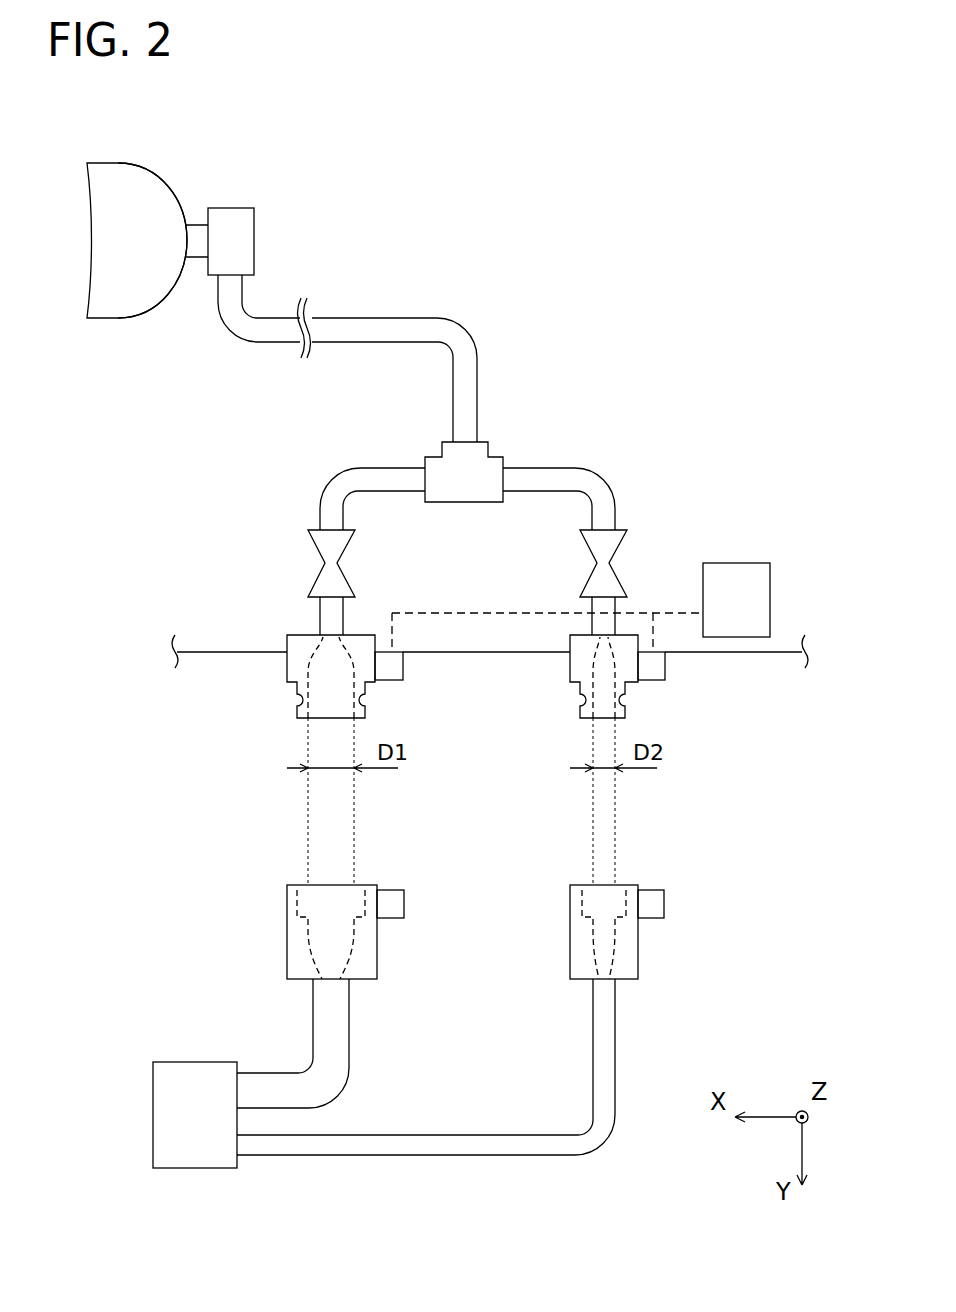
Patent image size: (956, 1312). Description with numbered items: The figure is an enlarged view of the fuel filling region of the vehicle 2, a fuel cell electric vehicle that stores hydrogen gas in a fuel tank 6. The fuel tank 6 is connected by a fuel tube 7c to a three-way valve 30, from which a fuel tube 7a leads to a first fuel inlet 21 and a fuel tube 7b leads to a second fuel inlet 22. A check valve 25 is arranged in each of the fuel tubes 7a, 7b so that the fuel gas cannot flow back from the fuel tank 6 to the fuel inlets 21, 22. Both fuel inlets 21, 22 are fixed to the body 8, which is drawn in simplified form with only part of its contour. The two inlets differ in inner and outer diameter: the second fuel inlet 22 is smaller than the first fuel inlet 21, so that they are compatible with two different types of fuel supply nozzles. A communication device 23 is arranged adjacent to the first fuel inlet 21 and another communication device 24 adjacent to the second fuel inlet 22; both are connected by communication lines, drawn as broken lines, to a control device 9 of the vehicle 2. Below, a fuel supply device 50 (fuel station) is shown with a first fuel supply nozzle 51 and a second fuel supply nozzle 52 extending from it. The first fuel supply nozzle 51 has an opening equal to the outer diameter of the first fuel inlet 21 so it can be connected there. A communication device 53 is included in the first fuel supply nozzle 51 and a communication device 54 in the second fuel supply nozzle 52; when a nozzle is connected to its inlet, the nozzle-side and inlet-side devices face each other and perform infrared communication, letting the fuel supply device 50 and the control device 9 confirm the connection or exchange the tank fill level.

The vehicle 2 is at (345, 213).
The fuel tank 6 is at (117, 318).
The fuel tube 7a is at (375, 468).
The fuel tube 7b is at (558, 468).
The fuel tube 7c is at (477, 380).
The body 8 is at (750, 652).
The control device 9 is at (745, 563).
The first fuel inlet 21 is at (287, 672).
The second fuel inlet 22 is at (570, 670).
The communication device 23 is at (403, 668).
The communication device 24 is at (665, 672).
The check valve 25 is at (312, 580).
The three-way valve 30 is at (458, 502).
The fuel supply device 50 is at (185, 1062).
The first fuel supply nozzle 51 is at (287, 952).
The second fuel supply nozzle 52 is at (570, 952).
The communication device 53 is at (404, 903).
The communication device 54 is at (664, 903).